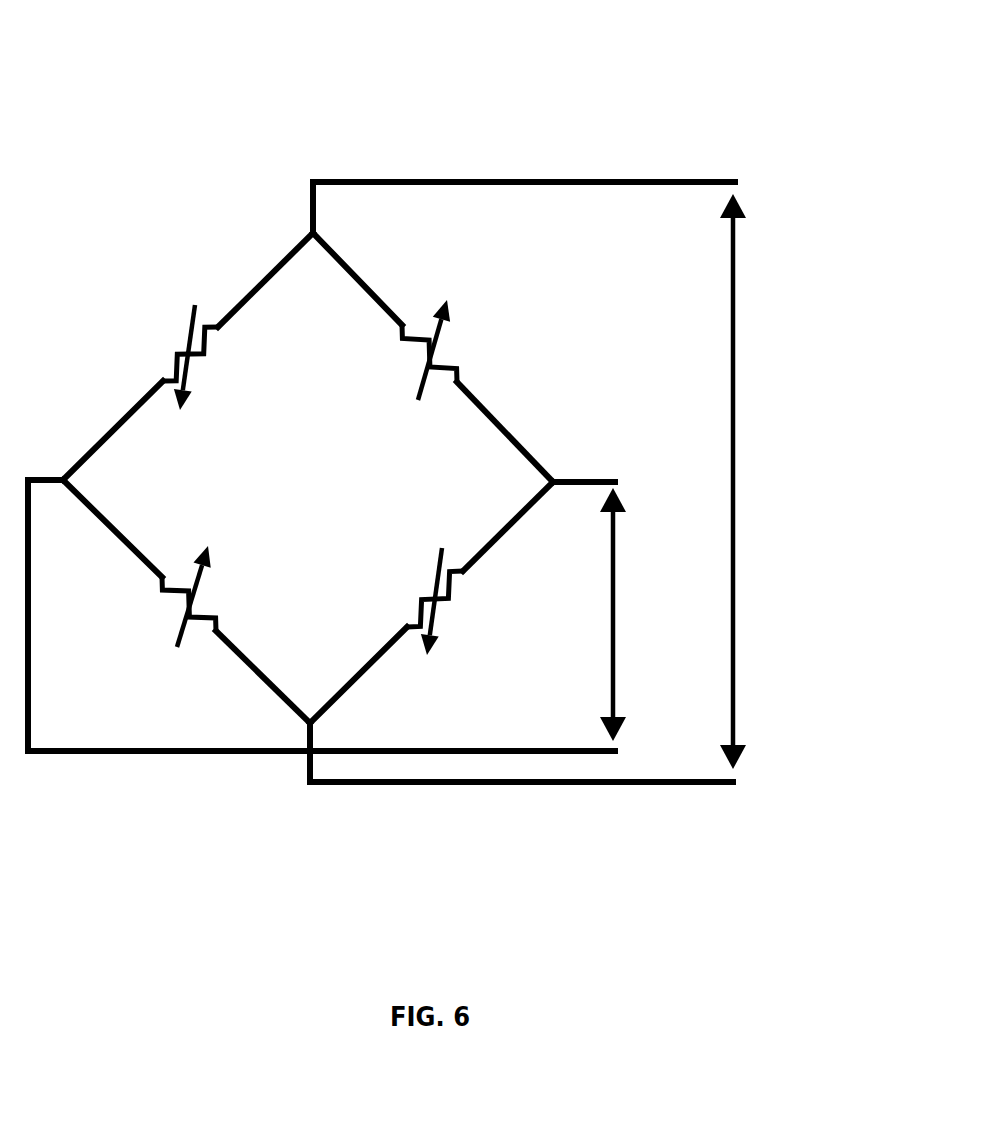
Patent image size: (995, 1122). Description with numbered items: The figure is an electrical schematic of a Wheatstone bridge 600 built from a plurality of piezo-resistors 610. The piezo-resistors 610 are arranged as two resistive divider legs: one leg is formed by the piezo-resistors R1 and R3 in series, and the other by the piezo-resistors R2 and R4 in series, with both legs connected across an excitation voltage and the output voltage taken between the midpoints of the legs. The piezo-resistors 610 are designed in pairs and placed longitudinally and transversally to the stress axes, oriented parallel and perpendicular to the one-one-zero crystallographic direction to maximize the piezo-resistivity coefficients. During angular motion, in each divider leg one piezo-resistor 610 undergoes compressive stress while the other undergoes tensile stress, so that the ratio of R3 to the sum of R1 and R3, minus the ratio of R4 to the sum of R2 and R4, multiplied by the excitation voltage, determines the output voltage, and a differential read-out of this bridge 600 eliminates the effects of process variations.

The Wheatstone bridge 600 is at (145, 104).
The piezo-resistors 610 is at (166, 575).
The piezo-resistor R1 is at (175, 357).
The piezo-resistor R2 is at (445, 350).
The piezo-resistor R3 is at (174, 596).
The piezo-resistor R4 is at (448, 601).